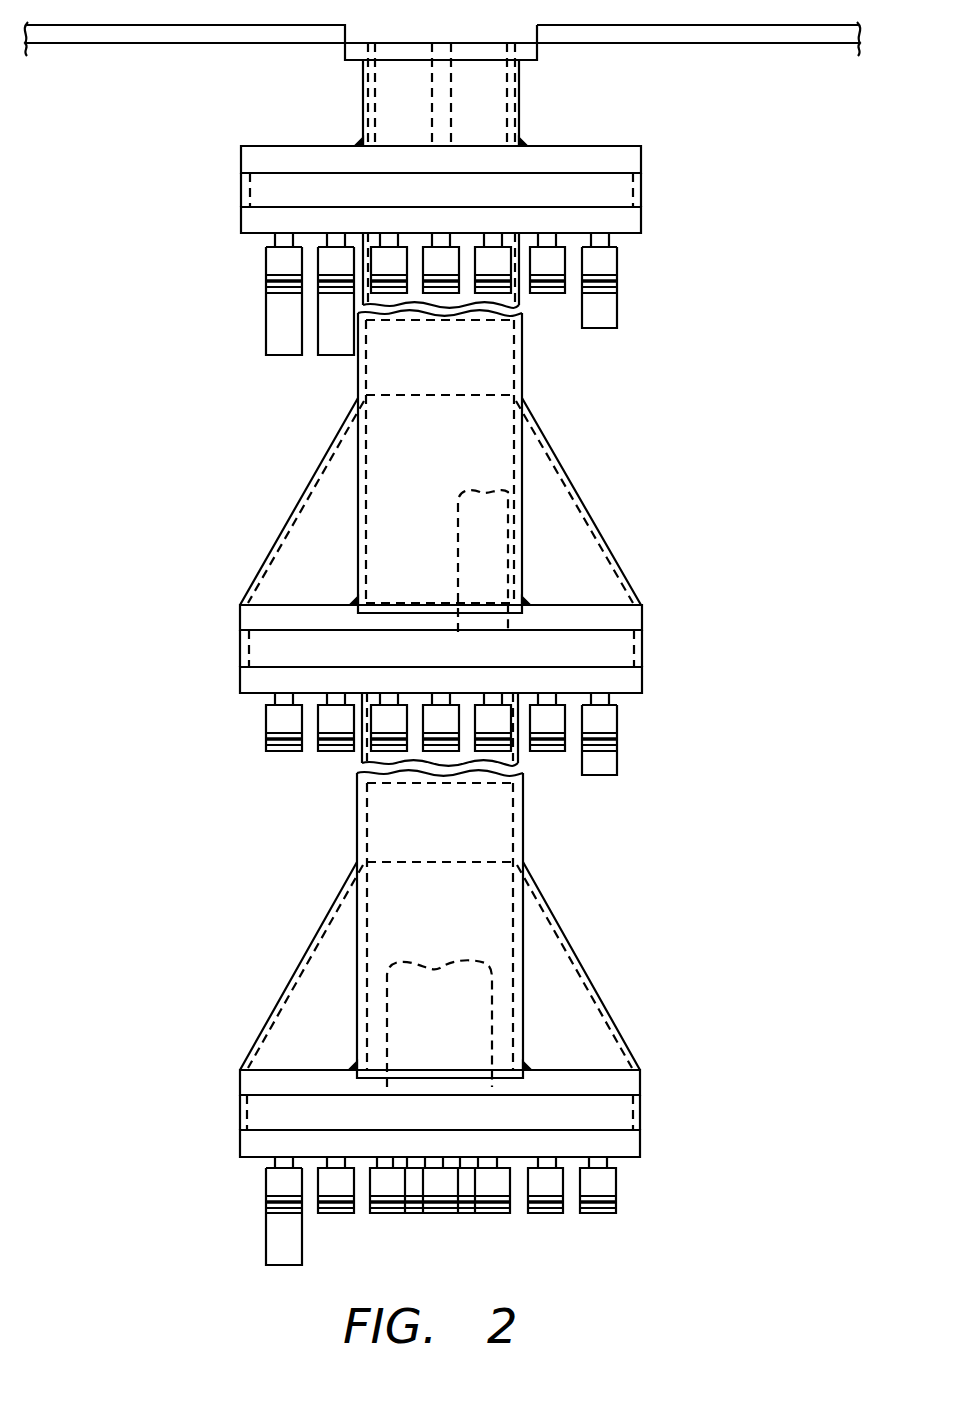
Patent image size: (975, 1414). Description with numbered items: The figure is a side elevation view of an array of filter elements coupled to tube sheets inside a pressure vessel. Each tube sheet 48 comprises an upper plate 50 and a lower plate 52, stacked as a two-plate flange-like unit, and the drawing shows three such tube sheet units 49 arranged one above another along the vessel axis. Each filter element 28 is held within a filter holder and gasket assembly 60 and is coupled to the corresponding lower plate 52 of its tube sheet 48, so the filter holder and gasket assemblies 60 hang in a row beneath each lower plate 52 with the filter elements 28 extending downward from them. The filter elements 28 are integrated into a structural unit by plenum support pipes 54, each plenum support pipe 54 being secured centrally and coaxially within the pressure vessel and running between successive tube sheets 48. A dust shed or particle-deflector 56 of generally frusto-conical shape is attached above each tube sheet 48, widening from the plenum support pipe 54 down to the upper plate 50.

The filter element 28 is at (268, 318).
The tube sheet 48 is at (695, 25).
The flange assembly 49 is at (444, 629).
The upper plate 50 is at (258, 160).
The lower plate 52 is at (258, 222).
The plenum support pipe 54 is at (520, 100).
The dust shed or particle-deflector 56 is at (282, 532).
The filter holder and gasket assembly 60 is at (264, 262).